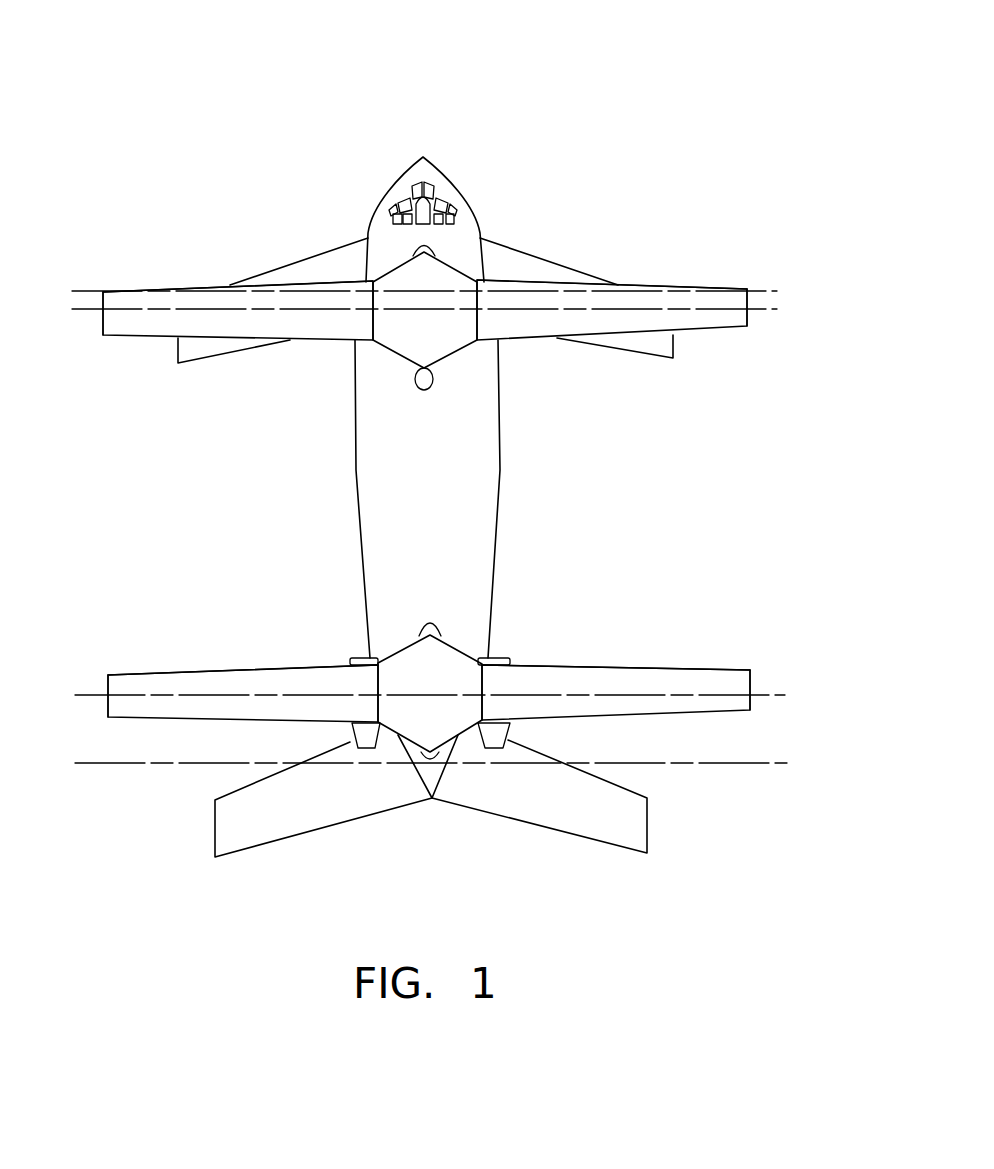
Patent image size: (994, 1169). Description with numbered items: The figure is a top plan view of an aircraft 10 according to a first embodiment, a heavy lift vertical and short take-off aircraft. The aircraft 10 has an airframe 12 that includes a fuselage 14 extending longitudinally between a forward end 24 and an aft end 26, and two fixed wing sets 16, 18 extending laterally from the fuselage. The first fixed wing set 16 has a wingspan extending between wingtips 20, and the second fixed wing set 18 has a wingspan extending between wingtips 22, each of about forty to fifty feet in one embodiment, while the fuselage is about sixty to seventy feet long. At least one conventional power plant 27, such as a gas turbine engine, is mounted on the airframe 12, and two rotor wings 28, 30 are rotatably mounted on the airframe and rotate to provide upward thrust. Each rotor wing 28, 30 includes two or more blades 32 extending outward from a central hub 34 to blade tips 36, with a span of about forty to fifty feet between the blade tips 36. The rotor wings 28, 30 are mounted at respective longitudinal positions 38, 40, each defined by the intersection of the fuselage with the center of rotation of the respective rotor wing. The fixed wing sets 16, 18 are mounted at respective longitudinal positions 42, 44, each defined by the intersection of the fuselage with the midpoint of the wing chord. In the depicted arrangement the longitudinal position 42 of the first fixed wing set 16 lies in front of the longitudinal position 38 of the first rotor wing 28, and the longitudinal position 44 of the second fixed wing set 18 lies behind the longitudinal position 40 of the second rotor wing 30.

The aircraft 10 is at (640, 58).
The airframe 12 is at (500, 486).
The fuselage 14 is at (355, 486).
The first fixed wing set 16 is at (432, 318).
The second fixed wing set 18 is at (426, 823).
The wingtips 20 is at (177, 358).
The wingtips 22 is at (215, 833).
The forward end 24 is at (478, 182).
The aft end 26 is at (400, 787).
The power plant 27 is at (350, 735).
The first rotor wing 28 is at (118, 350).
The second rotor wing 30 is at (431, 721).
The blades 32 is at (210, 284).
The central hub 34 is at (482, 322).
The blade tips 36 is at (103, 325).
The first longitudinal position 38 is at (763, 310).
The second longitudinal position 40 is at (772, 688).
The longitudinal position of first fixed wing set 42 is at (763, 287).
The longitudinal position of second fixed wing set 44 is at (707, 760).